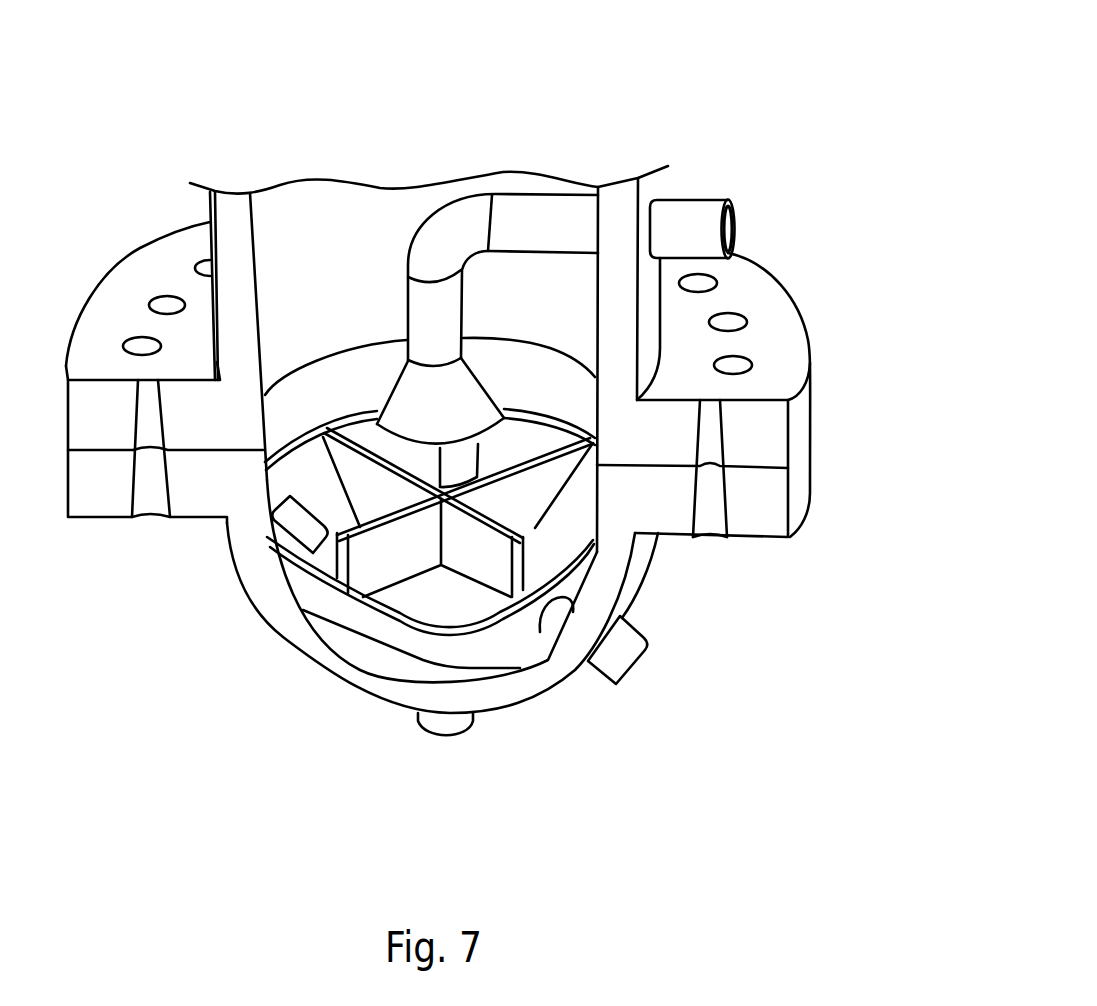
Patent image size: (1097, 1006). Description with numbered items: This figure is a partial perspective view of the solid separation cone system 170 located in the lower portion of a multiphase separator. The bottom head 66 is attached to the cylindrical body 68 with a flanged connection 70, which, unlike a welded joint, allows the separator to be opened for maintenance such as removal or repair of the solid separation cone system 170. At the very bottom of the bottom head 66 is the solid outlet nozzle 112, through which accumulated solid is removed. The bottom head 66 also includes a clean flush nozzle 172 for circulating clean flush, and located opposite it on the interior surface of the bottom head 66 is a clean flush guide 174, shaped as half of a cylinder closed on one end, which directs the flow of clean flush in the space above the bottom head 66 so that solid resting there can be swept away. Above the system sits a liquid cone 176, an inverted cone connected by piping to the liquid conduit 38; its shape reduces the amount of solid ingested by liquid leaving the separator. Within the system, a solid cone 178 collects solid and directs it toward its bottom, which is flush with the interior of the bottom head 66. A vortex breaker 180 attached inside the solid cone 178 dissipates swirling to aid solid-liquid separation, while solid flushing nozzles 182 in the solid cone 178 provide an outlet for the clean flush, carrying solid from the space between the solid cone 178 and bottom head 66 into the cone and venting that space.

The solid separation cone system 170 is at (711, 78).
The cylindrical body 68 is at (223, 210).
The bottom head 66 is at (607, 575).
The flanged connection 70 is at (757, 470).
The liquid conduit 38 is at (700, 197).
The liquid cone 176 is at (391, 383).
The solid cone 178 is at (350, 597).
The vortex breaker 180 is at (372, 490).
The solid flushing nozzles 182 is at (300, 522).
The clean flush nozzle 172 is at (640, 622).
The clean flush guide 174 is at (530, 612).
The solid outlet nozzle 112 is at (475, 722).